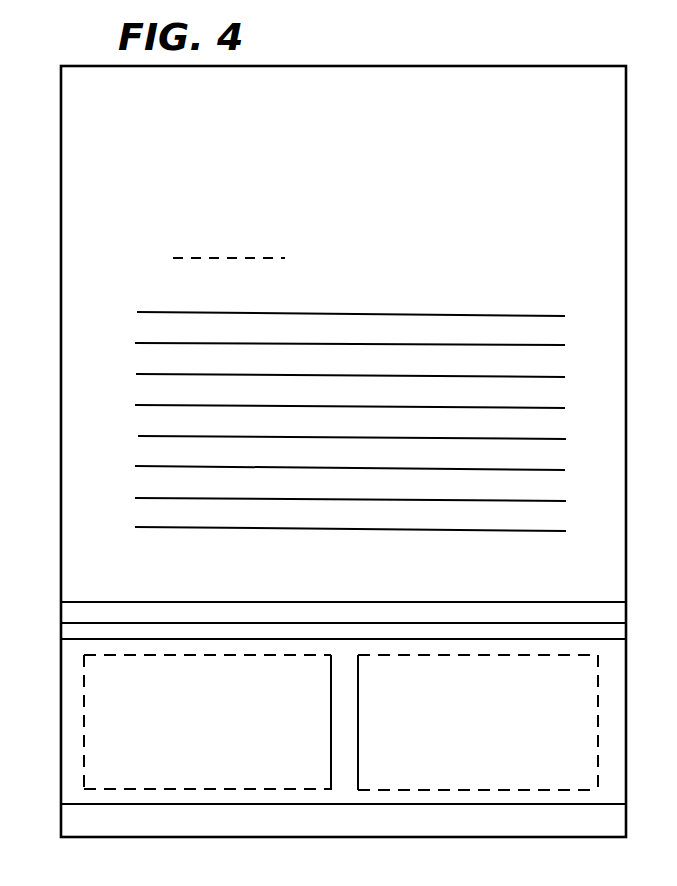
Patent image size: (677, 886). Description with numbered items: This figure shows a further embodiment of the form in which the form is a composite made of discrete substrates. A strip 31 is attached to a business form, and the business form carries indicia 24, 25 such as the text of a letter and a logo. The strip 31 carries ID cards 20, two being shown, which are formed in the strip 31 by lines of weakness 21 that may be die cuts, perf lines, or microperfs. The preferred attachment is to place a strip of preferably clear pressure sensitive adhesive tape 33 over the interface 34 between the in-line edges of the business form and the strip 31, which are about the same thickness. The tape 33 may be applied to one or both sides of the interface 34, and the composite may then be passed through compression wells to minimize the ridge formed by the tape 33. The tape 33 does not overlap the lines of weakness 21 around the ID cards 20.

The ID cards 20 is at (406, 770).
The lines of weakness 21 is at (568, 655).
The indicia 24 is at (162, 265).
The indicia 25 is at (392, 104).
The strip 31 is at (56, 813).
The pressure sensitive adhesive tape 33 is at (70, 612).
The interface 34 is at (368, 622).